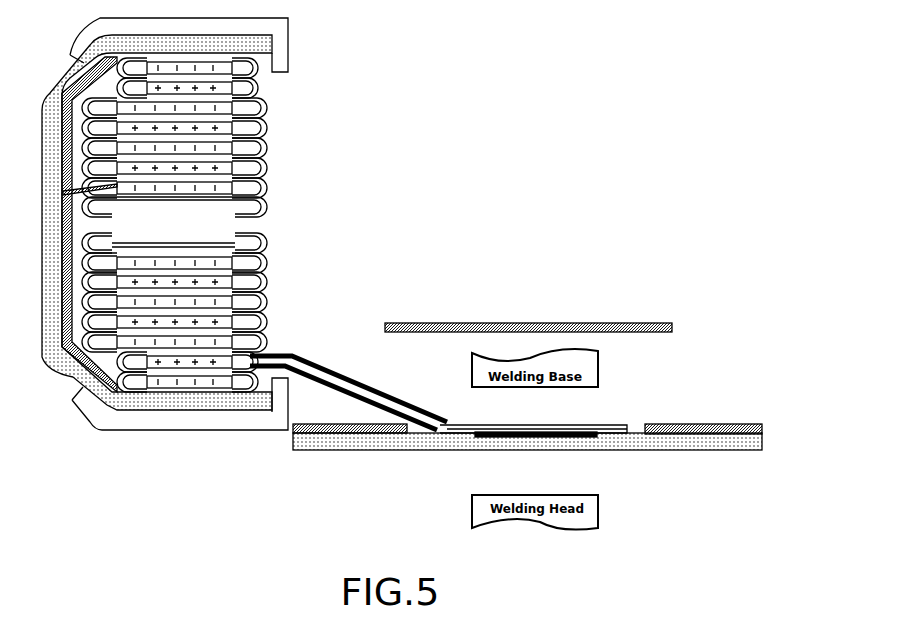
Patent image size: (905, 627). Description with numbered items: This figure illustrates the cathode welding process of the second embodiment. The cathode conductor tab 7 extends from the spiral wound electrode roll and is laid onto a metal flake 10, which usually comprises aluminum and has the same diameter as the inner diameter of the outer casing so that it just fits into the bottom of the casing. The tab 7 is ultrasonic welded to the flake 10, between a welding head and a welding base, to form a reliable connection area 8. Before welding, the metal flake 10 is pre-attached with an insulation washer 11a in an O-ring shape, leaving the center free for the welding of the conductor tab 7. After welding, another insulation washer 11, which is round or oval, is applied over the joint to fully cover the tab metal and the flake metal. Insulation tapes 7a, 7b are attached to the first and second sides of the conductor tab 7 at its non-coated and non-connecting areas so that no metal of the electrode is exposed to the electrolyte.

The cathode conductor tab 7 is at (610, 430).
The insulation tape 7a is at (336, 386).
The insulation tape 7b is at (333, 373).
The connection area 8 is at (583, 434).
The metal flake 10 is at (347, 442).
The insulation washer 11 is at (578, 323).
The insulation washer 11a is at (297, 440).